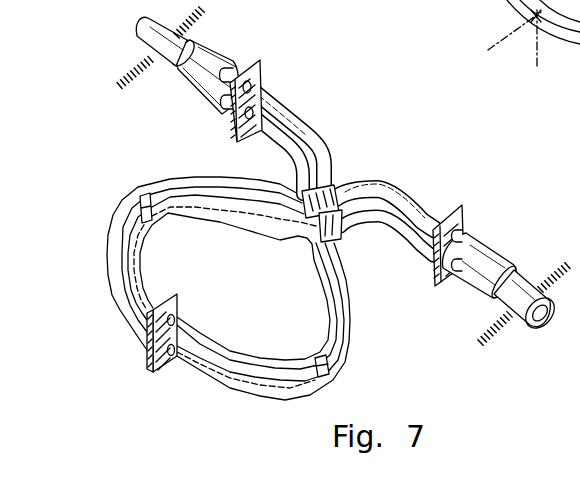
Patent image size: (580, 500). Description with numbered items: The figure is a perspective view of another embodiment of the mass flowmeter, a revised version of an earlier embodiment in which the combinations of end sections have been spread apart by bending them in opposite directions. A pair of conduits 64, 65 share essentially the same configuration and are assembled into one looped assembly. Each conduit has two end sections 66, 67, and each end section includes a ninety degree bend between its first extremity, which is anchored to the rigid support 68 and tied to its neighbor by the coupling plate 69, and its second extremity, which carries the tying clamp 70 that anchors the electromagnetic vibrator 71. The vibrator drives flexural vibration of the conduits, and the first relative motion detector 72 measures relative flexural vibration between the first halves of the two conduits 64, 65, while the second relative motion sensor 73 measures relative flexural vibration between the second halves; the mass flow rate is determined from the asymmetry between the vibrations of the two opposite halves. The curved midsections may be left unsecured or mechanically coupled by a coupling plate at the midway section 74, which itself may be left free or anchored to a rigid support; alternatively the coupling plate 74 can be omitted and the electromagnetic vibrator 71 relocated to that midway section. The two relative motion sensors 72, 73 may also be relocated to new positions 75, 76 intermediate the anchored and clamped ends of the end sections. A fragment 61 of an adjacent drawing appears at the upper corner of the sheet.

The adjacent figure fragment 61 is at (502, 37).
The conduit 64 is at (107, 236).
The conduit 65 is at (118, 300).
The end section 66 is at (288, 99).
The end section 67 is at (420, 197).
The rigid support 68 is at (132, 66).
The coupling plate 69 is at (265, 64).
The tying clamp 70 is at (294, 186).
The electromagnetic vibrator 71 is at (340, 245).
The first relative motion detector 72 is at (148, 194).
The second relative motion sensor 73 is at (334, 357).
The coupling plate at the midway section 74 is at (146, 345).
The new position for relative motion sensor 75 is at (316, 130).
The new position for relative motion sensor 76 is at (402, 186).